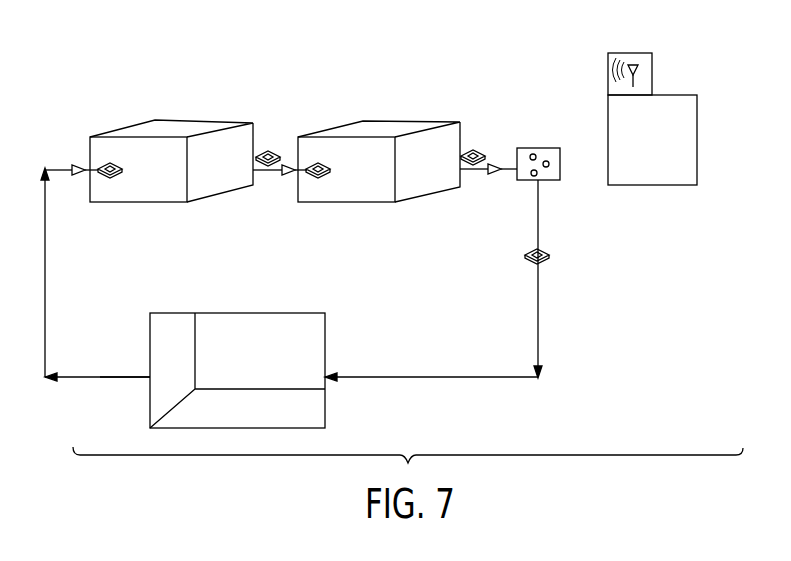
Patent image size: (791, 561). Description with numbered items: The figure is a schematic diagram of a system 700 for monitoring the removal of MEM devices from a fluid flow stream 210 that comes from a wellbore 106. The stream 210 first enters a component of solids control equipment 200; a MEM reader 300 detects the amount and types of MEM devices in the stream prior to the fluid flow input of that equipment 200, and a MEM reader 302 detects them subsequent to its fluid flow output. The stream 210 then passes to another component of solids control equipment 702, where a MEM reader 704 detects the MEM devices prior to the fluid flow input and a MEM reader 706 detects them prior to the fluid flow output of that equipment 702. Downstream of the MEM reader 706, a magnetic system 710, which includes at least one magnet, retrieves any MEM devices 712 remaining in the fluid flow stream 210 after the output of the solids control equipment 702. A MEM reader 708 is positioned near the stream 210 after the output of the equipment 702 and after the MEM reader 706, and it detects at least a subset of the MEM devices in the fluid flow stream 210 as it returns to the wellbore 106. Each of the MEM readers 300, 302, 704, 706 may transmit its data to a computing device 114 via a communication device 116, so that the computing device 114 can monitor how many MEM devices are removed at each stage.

The system 700 is at (132, 78).
The component of solids control equipment 200 is at (213, 120).
The MEM reader 300 is at (117, 176).
The MEM reader 302 is at (268, 150).
The component of solids control equipment 702 is at (408, 120).
The MEM reader 704 is at (320, 178).
The MEM reader 706 is at (479, 148).
The magnetic system 710 is at (548, 182).
The MEM devices 712 is at (536, 148).
The MEM reader 708 is at (551, 256).
The communication device 116 is at (647, 73).
The computing device 114 is at (690, 143).
The wellbore 106 is at (326, 348).
The fluid flow stream 210 is at (100, 376).